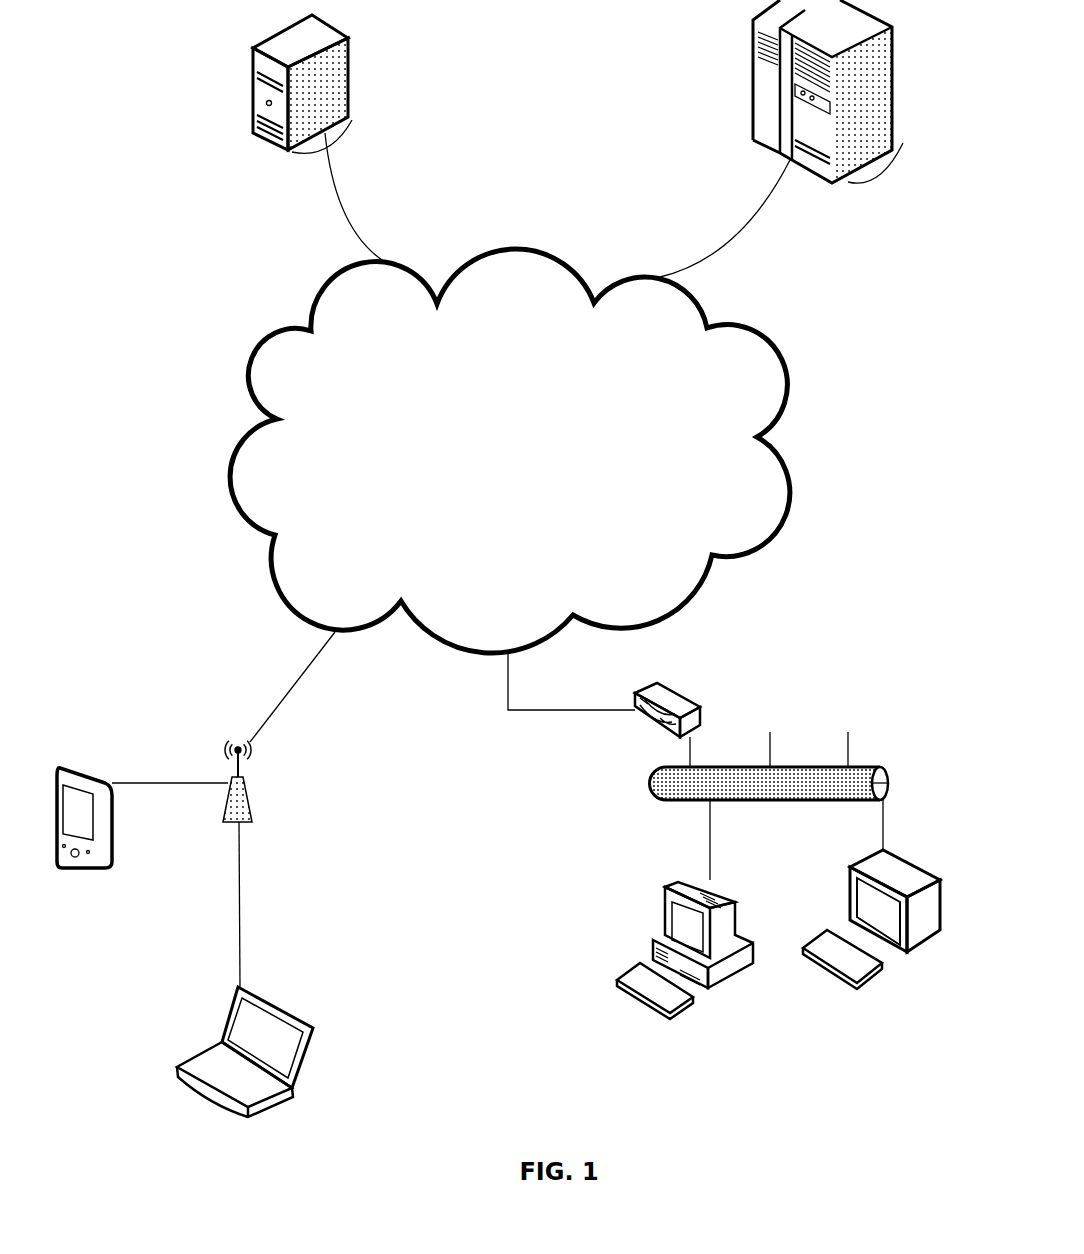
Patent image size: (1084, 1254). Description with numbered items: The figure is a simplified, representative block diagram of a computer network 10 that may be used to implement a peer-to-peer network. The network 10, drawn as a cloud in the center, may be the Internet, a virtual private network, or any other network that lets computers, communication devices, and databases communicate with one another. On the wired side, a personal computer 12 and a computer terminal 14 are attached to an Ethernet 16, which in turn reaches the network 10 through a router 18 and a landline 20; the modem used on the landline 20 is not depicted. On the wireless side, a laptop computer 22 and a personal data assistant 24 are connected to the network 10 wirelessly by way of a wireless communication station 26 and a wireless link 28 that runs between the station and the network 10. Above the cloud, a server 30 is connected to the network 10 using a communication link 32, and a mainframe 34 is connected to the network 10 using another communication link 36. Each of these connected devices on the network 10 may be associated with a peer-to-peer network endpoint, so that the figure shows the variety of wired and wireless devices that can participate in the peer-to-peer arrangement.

The network 10 is at (185, 328).
The personal computer 12 is at (663, 930).
The computer terminal 14 is at (925, 867).
The Ethernet 16 is at (880, 767).
The router 18 is at (700, 708).
The landline 20 is at (550, 712).
The laptop computer 22 is at (268, 1103).
The personal data assistant 24 is at (87, 770).
The wireless communication station 26 is at (252, 817).
The wireless link 28 is at (285, 695).
The server 30 is at (348, 82).
The communication link 32 is at (357, 238).
The mainframe 34 is at (848, 182).
The communication link 36 is at (757, 217).